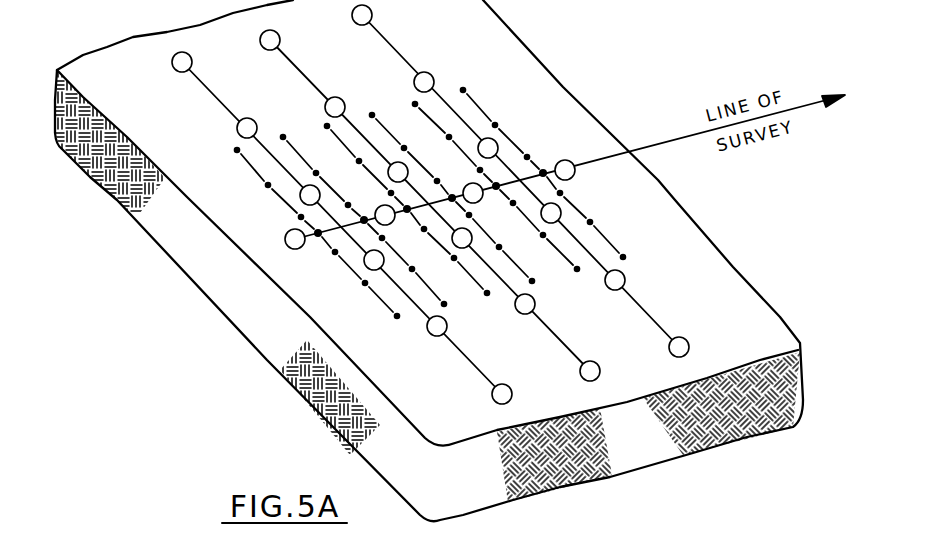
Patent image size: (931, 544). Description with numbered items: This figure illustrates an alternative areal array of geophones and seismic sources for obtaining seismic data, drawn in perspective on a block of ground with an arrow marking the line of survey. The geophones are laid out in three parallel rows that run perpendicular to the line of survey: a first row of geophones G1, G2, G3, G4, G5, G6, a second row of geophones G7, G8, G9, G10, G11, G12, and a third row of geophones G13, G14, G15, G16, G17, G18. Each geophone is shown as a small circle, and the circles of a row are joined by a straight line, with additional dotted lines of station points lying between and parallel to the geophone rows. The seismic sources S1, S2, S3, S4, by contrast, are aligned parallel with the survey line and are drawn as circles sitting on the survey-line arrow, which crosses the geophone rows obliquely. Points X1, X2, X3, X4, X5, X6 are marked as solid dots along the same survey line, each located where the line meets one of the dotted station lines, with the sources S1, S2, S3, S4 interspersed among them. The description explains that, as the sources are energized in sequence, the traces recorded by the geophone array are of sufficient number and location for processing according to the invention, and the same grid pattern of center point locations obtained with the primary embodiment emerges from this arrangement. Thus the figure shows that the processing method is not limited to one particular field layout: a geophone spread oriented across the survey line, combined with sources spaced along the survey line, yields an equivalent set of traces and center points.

The geophone G1 is at (182, 62).
The geophone G2 is at (247, 128).
The geophone G3 is at (310, 195).
The geophone G4 is at (374, 260).
The geophone G5 is at (437, 326).
The geophone G6 is at (502, 394).
The geophone G7 is at (270, 40).
The geophone G8 is at (335, 107).
The geophone G9 is at (398, 172).
The geophone G10 is at (462, 238).
The geophone G11 is at (525, 304).
The geophone G12 is at (590, 371).
The geophone G13 is at (362, 15).
The geophone G14 is at (424, 82).
The geophone G15 is at (488, 148).
The geophone G16 is at (551, 213).
The geophone G17 is at (615, 280).
The geophone G18 is at (679, 347).
The seismic source S1 is at (295, 239).
The seismic source S2 is at (385, 215).
The seismic source S3 is at (473, 193).
The seismic source S4 is at (565, 170).
The survey station point X1 is at (318, 238).
The survey station point X2 is at (363, 215).
The survey station point X3 is at (407, 214).
The survey station point X4 is at (452, 193).
The survey station point X5 is at (496, 191).
The survey station point X6 is at (544, 168).